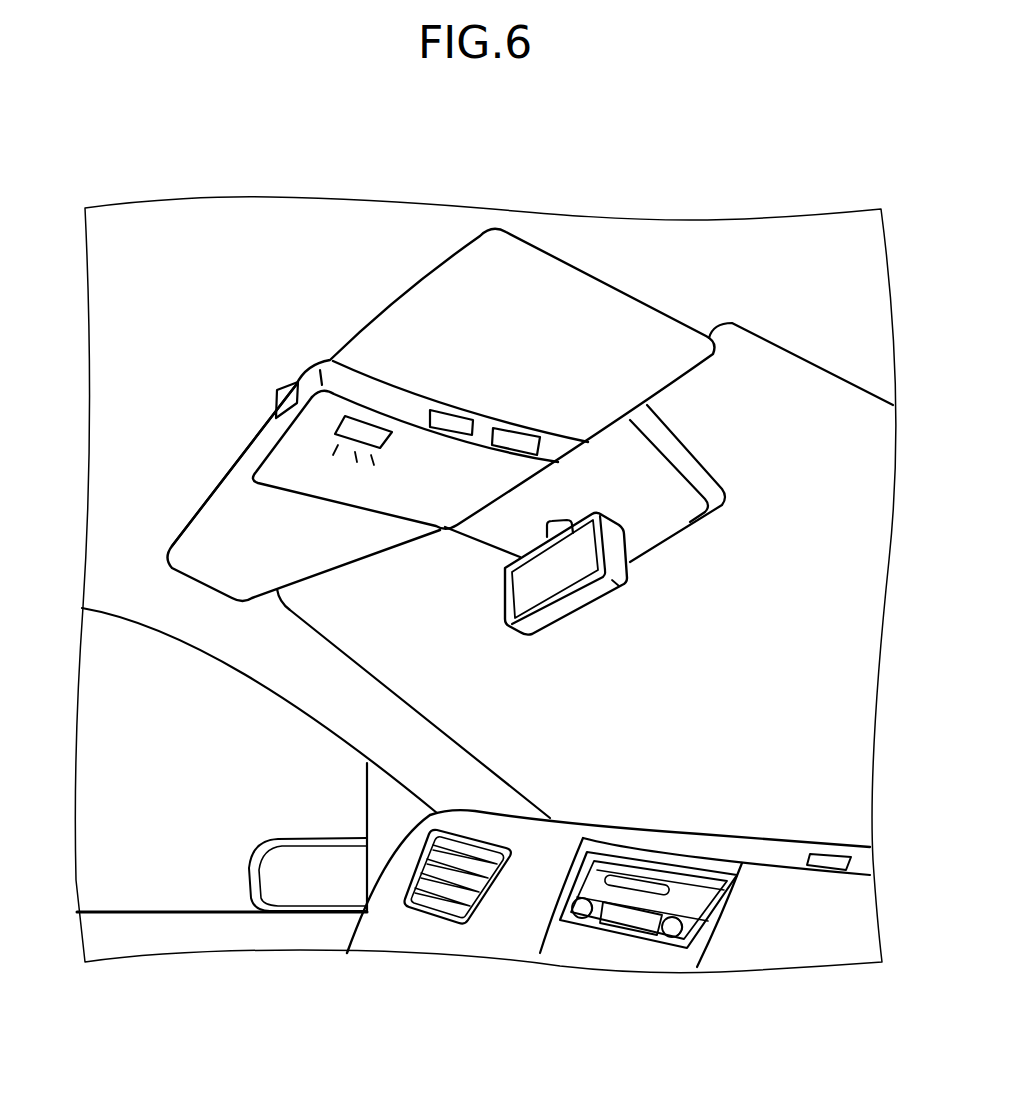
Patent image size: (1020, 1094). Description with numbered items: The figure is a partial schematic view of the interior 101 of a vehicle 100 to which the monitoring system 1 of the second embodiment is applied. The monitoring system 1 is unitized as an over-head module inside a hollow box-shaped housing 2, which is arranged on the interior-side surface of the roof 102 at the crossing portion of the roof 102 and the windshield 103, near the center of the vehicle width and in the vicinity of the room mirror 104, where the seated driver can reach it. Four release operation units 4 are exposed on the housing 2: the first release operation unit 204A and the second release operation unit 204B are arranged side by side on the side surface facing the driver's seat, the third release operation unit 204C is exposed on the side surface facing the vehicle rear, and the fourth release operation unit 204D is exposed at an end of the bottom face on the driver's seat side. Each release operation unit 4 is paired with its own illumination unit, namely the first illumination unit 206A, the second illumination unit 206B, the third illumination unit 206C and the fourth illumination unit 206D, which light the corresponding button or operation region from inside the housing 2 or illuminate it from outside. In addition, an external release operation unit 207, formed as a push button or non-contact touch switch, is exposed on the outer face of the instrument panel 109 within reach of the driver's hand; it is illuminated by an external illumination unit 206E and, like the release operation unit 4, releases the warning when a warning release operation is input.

The vehicle 100 is at (266, 170).
The interior 101 is at (130, 670).
The roof 102 is at (190, 280).
The windshield 103 is at (787, 435).
The room mirror 104 is at (579, 623).
The instrument panel 109 is at (673, 833).
The monitoring system 1 is at (416, 365).
The housing 2 is at (384, 396).
The release operation unit 4 is at (386, 300).
The first release operation unit 204A is at (452, 282).
The second release operation unit 204B is at (573, 292).
The third release operation unit 204C is at (216, 367).
The fourth release operation unit 204D is at (255, 443).
The first illumination unit 206A is at (456, 416).
The second illumination unit 206B is at (521, 432).
The third illumination unit 206C is at (279, 396).
The fourth illumination unit 206D is at (338, 433).
The external illumination unit 206E is at (827, 855).
The external release operation unit 207 is at (813, 808).